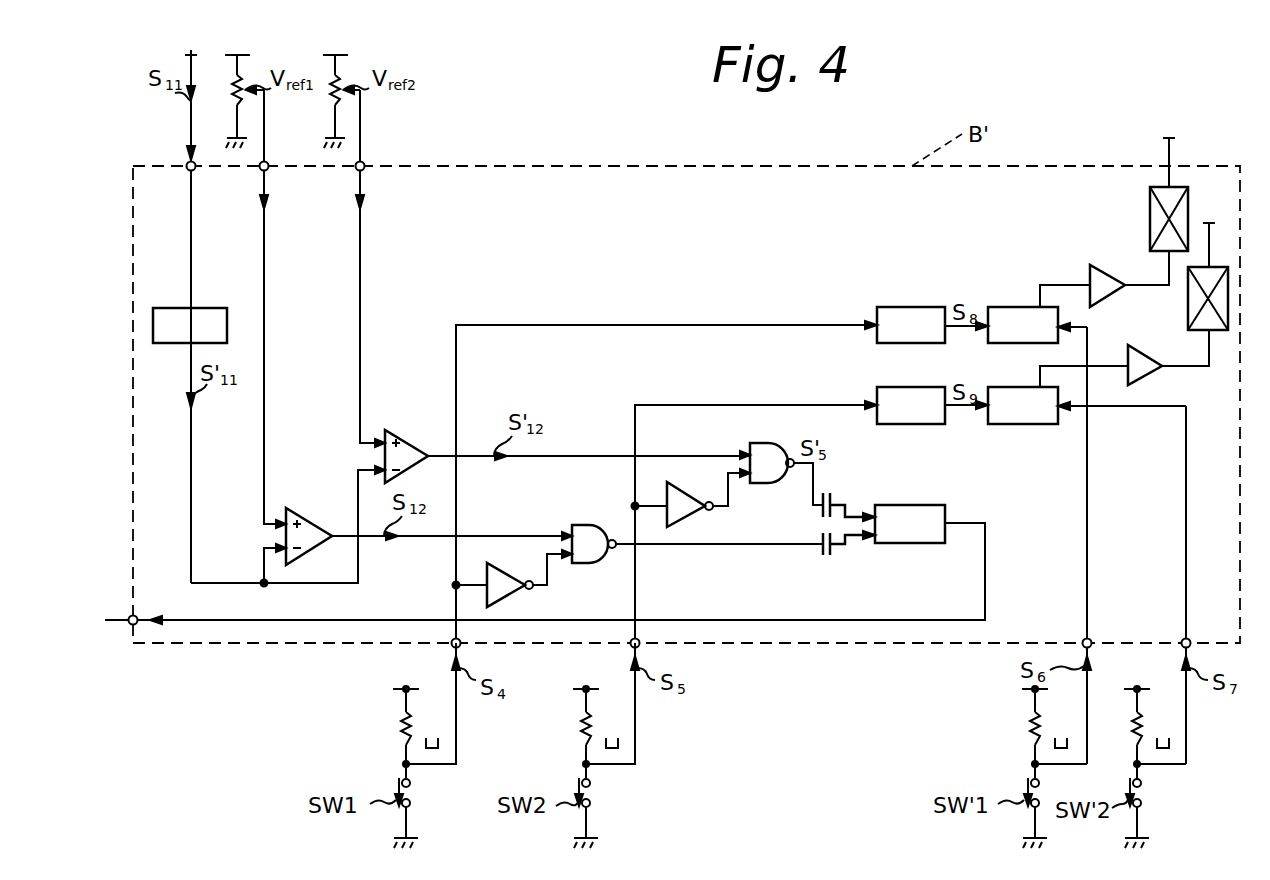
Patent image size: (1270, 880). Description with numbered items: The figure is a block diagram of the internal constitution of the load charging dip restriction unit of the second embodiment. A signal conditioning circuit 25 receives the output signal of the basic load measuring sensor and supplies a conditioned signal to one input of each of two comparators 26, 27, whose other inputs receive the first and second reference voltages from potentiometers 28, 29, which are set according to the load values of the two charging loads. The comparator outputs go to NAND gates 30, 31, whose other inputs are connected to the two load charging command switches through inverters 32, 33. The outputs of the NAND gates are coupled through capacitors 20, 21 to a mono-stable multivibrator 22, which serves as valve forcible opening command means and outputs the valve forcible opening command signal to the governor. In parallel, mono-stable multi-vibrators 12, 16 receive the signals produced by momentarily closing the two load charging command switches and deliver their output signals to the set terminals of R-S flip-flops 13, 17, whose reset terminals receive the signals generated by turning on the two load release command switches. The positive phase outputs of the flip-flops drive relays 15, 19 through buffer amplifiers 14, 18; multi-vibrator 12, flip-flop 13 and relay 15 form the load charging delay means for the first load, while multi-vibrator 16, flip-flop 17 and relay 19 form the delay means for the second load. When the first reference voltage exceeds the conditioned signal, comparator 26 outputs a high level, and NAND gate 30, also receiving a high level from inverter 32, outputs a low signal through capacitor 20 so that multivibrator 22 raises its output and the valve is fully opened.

The mono-stable multi-vibrator 12 is at (900, 308).
The R-S flip-flop 13 is at (1001, 307).
The buffer amplifier 14 is at (1094, 280).
The relay 15 is at (1150, 202).
The mono-stable multi-vibrator 16 is at (892, 387).
The R-S flip-flop 17 is at (1024, 424).
The buffer amplifier 18 is at (1148, 378).
The relay 19 is at (1188, 302).
The capacitor 20 is at (825, 558).
The capacitor 21 is at (832, 494).
The mono-stable multivibrator 22 is at (934, 508).
The signal conditioning circuit 25 is at (206, 308).
The comparator 26 is at (306, 520).
The comparator 27 is at (398, 434).
The potentiometer 28 is at (221, 82).
The potentiometer 29 is at (338, 86).
The NAND gate 30 is at (578, 525).
The NAND gate 31 is at (770, 445).
The inverter 32 is at (517, 588).
The inverter 33 is at (700, 506).